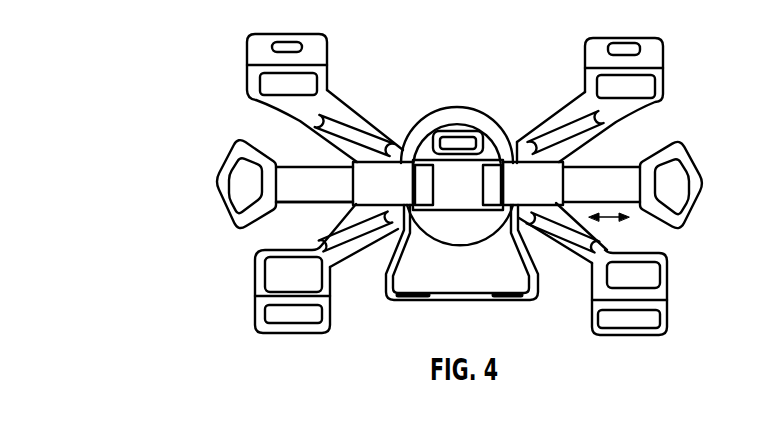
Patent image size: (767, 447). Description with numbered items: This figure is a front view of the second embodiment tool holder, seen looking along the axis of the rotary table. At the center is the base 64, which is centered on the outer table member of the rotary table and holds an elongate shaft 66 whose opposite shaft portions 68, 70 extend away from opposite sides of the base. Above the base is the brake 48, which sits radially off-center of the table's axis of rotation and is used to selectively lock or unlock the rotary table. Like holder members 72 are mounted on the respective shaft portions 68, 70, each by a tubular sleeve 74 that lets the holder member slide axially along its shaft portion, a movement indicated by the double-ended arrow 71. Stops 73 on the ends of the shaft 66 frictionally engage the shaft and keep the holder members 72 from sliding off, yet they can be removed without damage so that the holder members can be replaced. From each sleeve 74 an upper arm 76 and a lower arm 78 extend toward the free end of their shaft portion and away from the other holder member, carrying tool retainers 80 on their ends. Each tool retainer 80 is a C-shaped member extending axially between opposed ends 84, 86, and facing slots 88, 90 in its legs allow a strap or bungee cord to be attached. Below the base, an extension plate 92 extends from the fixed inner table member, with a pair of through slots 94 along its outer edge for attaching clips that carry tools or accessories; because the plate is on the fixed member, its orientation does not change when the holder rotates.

The brake 48 is at (433, 138).
The base 64 is at (487, 158).
The elongate shaft 66 is at (293, 203).
The shaft portion 68 is at (306, 167).
The shaft portion 70 is at (618, 167).
The double-ended arrow 71 is at (610, 218).
The holder member 72 is at (248, 79).
The stop 73 is at (218, 161).
The tubular sleeve 74 is at (518, 140).
The upper arm 76 is at (562, 113).
The lower arm 78 is at (558, 262).
The tool retainer 80 is at (585, 55).
The opposed end 84 is at (590, 322).
The opposed end 86 is at (667, 327).
The slot 88 is at (641, 49).
The slot 90 is at (642, 89).
The extension plate 92 is at (384, 289).
The through slot 94 is at (415, 302).